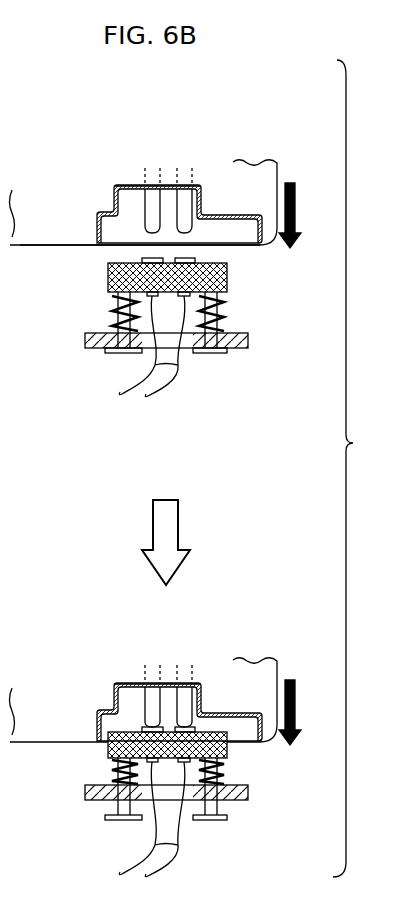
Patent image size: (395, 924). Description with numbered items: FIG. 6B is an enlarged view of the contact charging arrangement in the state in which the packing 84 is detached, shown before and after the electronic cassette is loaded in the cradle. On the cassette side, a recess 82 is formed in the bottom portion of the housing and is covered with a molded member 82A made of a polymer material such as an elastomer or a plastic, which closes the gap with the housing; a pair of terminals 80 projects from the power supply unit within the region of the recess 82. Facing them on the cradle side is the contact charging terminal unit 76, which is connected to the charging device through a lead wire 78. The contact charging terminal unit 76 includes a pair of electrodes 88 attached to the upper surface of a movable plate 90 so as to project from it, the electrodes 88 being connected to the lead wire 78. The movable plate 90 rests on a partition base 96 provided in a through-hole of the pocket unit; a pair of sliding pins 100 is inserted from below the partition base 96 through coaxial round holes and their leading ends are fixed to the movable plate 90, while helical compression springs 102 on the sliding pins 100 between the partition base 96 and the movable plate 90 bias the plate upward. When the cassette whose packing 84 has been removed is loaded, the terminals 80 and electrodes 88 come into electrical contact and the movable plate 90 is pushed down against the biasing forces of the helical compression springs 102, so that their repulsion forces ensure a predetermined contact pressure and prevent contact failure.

The contact charging terminal unit 76 is at (277, 127).
The lead wire 78 is at (167, 373).
The terminals 80 is at (183, 203).
The recess 82 is at (222, 228).
The molded member 82A is at (117, 187).
The packing 84 is at (117, 244).
The electrodes 88 is at (195, 258).
The movable plate 90 is at (227, 282).
The partition base 96 is at (248, 340).
The sliding pins 100 is at (113, 310).
The helical compression springs 102 is at (223, 312).